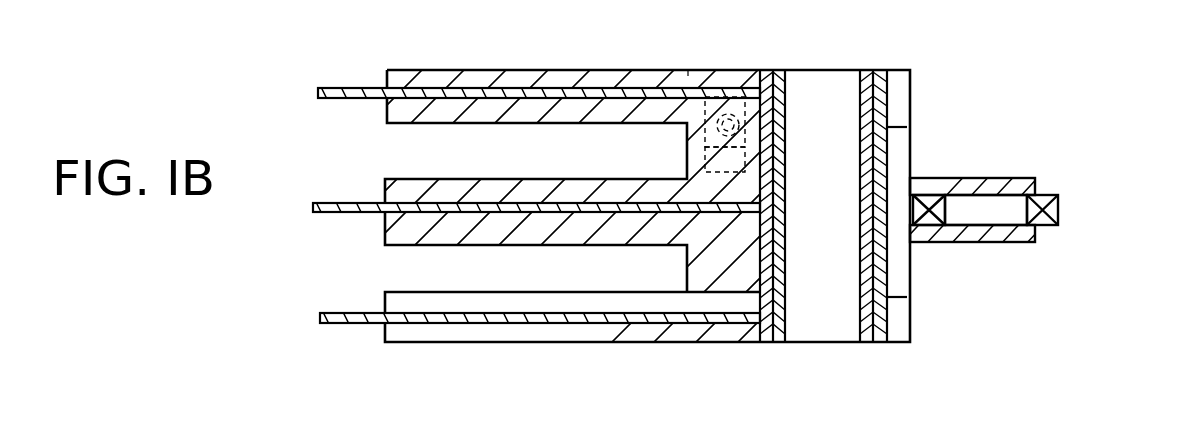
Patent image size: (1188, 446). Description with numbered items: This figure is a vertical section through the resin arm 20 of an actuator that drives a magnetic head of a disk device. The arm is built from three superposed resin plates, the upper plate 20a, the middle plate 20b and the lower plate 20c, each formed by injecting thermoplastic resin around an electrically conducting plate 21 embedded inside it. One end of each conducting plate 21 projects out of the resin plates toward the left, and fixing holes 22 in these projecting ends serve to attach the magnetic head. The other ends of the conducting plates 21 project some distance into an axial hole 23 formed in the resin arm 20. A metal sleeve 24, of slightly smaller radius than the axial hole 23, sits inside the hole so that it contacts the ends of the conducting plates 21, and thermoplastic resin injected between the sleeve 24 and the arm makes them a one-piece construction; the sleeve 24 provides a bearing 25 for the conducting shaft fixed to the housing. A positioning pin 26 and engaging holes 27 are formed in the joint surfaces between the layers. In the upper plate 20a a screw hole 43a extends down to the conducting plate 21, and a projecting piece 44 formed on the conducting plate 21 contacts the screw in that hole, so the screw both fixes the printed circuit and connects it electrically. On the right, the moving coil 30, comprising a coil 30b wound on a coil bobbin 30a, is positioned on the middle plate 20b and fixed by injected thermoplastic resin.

The resin arm 20 is at (588, 70).
The upper plate 20a is at (595, 112).
The middle plate 20b is at (447, 231).
The lower plate 20c is at (645, 343).
The electrically conducting plate 21 is at (465, 100).
The fixing holes 22 is at (346, 100).
The axial hole 23 is at (880, 122).
The sleeve 24 is at (890, 262).
The bearing 25 is at (830, 302).
The positioning pin 26 is at (760, 171).
The engaging holes 27 is at (873, 206).
The moving coil 30 is at (1028, 215).
The coil bobbin 30a is at (1005, 215).
The coil 30b is at (1045, 197).
The screw hole 43a is at (690, 74).
The projecting piece 44 is at (730, 151).